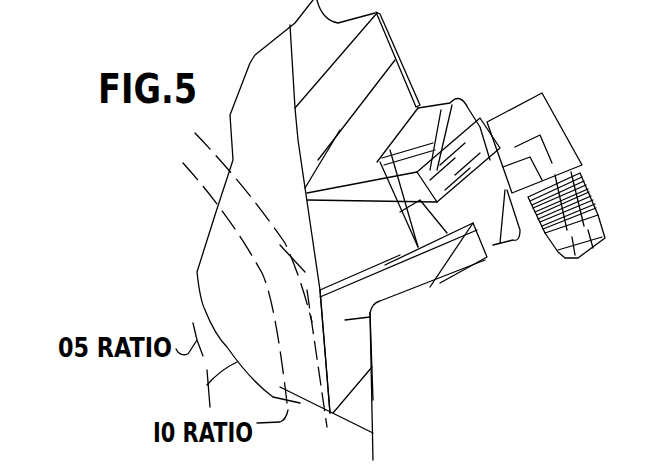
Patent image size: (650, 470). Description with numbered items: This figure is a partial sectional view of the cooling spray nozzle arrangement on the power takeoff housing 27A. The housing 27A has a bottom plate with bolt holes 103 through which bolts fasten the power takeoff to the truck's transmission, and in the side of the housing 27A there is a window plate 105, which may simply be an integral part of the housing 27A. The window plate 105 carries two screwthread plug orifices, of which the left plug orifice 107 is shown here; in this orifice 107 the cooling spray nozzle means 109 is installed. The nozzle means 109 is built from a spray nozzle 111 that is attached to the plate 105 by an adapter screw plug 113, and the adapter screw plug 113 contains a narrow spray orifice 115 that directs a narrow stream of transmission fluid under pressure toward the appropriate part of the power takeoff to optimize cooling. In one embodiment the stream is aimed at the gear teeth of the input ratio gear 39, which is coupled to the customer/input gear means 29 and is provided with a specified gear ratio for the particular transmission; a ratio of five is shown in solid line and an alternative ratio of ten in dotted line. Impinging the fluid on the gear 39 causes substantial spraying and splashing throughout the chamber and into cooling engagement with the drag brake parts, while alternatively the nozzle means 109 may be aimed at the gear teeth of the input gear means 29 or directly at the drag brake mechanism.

The bolt holes 103 is at (153, 0).
The window plate 105 is at (375, 58).
The screwthread plug orifice 107 is at (377, 223).
The cooling spray nozzle means 109 is at (500, 97).
The spray nozzle 111 is at (553, 123).
The adapter screw plug 113 is at (452, 117).
The spray orifice 115 is at (400, 212).
The housing 27A is at (357, 325).
The customer/input gear means 29 is at (323, 358).
The input ratio gear means 39 is at (285, 347).